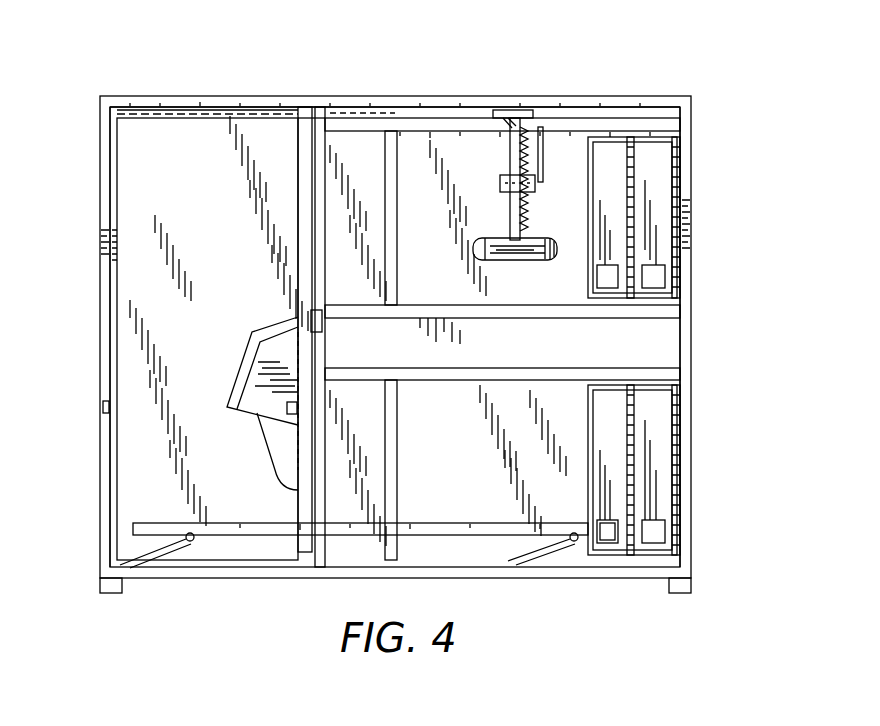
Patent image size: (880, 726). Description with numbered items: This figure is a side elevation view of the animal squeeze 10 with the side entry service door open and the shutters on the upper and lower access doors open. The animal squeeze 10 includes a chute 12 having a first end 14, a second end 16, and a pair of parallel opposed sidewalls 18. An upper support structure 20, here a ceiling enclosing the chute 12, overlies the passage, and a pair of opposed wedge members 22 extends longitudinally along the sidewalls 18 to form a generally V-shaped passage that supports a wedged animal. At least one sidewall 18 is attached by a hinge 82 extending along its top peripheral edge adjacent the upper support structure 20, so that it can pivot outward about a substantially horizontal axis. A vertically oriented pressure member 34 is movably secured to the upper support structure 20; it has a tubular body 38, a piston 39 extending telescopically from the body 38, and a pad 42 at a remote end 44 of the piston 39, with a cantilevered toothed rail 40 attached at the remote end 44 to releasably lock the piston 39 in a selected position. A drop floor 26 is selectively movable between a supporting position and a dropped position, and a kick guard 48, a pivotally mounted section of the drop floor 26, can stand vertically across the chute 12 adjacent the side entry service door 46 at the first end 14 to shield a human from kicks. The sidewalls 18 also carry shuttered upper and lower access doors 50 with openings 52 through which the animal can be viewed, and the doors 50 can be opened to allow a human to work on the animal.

The animal squeeze 10 is at (722, 180).
The chute 12 is at (237, 98).
The first end 14 is at (98, 310).
The second end 16 is at (690, 240).
The sidewalls 18 is at (155, 187).
The upper support structure 20 is at (330, 97).
The wedge members 22 is at (275, 353).
The drop floor 26 is at (202, 523).
The pressure member 34 is at (523, 176).
The tubular body 38 is at (512, 165).
The piston 39 is at (513, 215).
The cantilevered toothed rail 40 is at (531, 212).
The pad 42 is at (504, 262).
The remote end 44 is at (515, 236).
The side entry service door 46 is at (290, 130).
The kick guard 48 is at (257, 523).
The shuttered upper and lower access doors 50 is at (655, 197).
The openings 52 is at (606, 288).
The hinge 82 is at (180, 111).